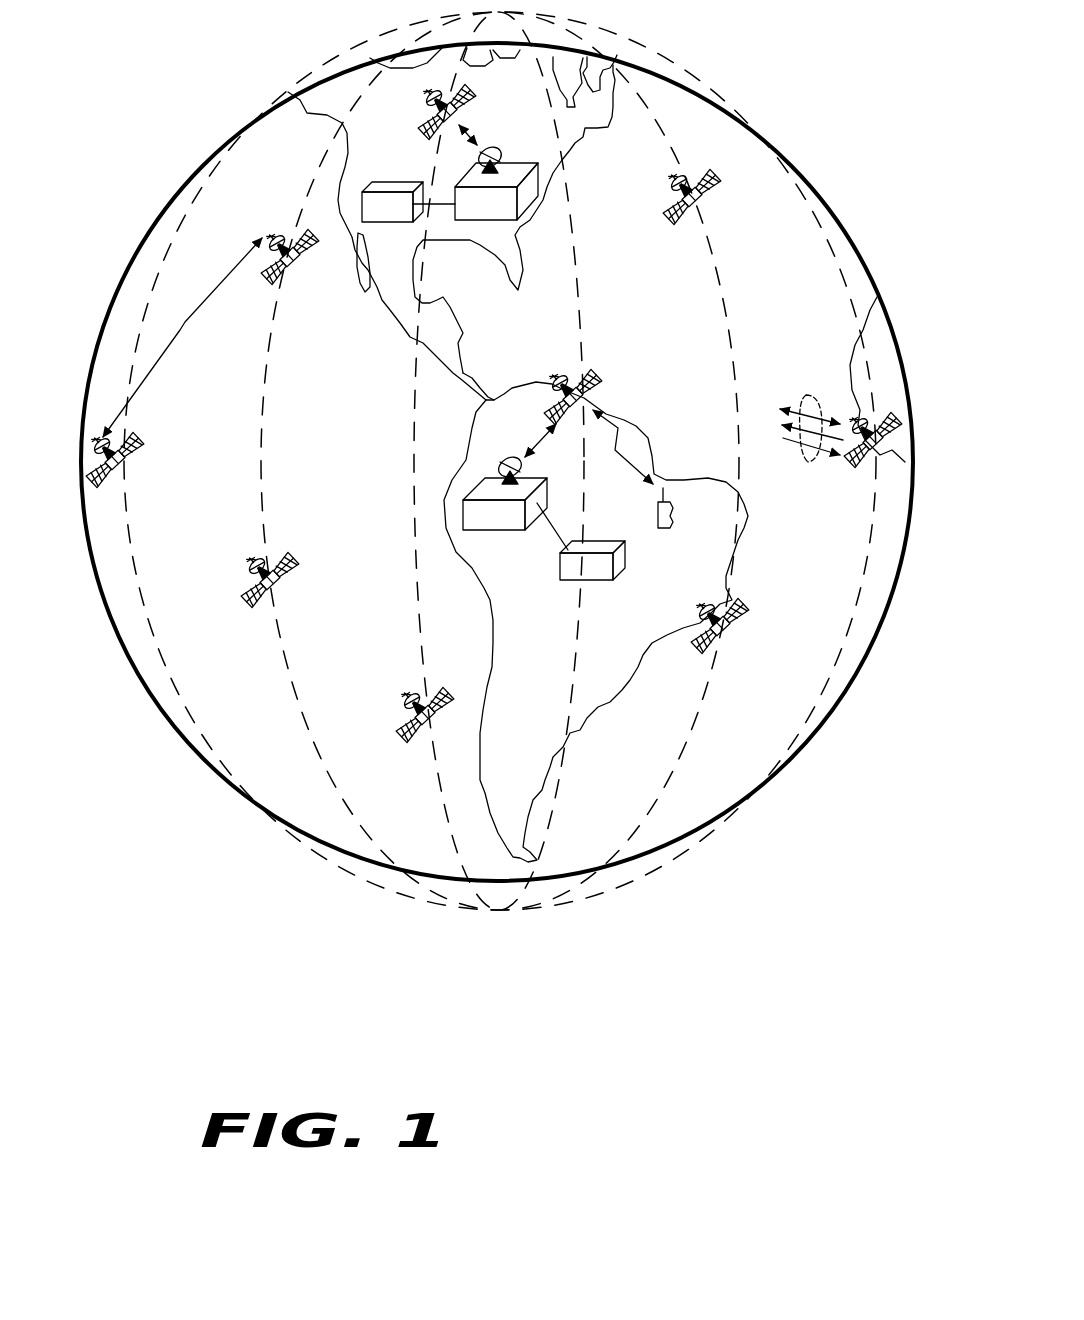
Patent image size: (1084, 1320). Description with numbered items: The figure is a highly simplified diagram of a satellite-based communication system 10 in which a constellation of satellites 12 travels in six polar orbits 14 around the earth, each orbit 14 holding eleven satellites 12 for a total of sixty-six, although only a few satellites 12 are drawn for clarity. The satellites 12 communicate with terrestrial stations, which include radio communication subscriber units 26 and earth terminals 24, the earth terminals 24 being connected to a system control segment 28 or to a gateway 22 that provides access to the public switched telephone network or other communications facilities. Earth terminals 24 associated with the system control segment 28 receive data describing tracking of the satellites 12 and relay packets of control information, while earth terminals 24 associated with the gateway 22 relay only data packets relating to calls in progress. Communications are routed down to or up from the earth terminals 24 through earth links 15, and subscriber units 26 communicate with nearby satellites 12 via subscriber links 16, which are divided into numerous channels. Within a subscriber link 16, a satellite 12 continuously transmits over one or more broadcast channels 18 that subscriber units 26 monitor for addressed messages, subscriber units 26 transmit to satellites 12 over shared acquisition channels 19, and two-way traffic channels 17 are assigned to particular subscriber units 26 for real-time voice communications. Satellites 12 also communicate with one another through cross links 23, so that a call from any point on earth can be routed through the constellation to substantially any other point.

The communication system 10 is at (493, 1010).
The satellite 12 is at (428, 136).
The polar orbit 14 is at (311, 184).
The earth link 15 is at (537, 437).
The subscriber link 16 is at (618, 428).
The traffic channel 17 is at (806, 404).
The broadcast channel 18 is at (781, 418).
The acquisition channel 19 is at (802, 452).
The gateway 22 is at (597, 582).
The cross link 23 is at (193, 330).
The earth terminal 24 is at (520, 163).
The subscriber unit 26 is at (663, 530).
The system control segment 28 is at (378, 222).